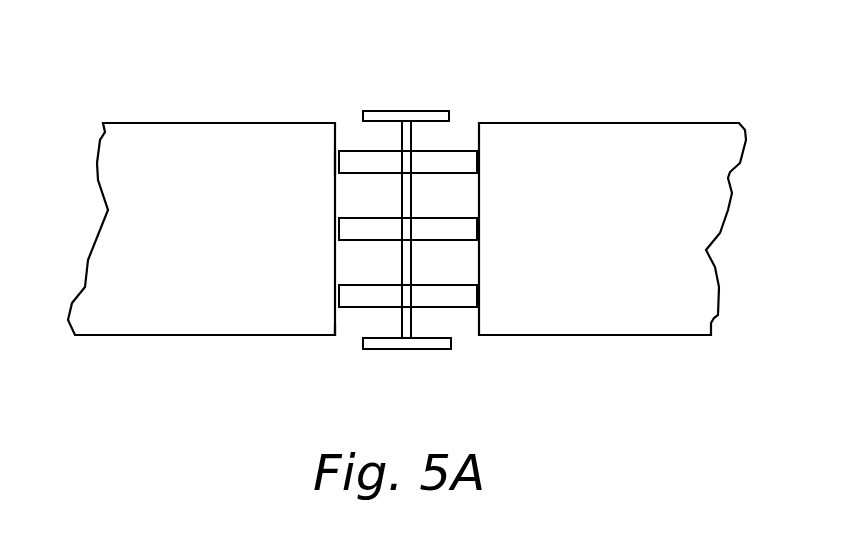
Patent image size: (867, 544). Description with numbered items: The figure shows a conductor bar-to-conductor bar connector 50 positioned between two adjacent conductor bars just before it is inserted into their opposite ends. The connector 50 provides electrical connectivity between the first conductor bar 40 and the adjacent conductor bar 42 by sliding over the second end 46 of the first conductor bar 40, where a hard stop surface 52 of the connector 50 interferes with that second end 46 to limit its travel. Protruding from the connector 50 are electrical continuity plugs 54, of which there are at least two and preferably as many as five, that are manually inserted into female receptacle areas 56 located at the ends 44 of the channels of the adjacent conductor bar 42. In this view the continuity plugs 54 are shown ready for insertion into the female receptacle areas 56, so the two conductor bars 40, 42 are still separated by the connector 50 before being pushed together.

The first conductor bar 40 is at (195, 125).
The conductor bar 42 is at (640, 127).
The ends 44 is at (475, 307).
The second end 46 is at (333, 335).
The conductor bar-to-conductor bar connector 50 is at (402, 110).
The hard stop surface 52 is at (412, 137).
The electrical continuity plugs 54 is at (355, 150).
The female receptacle areas 56 is at (335, 165).